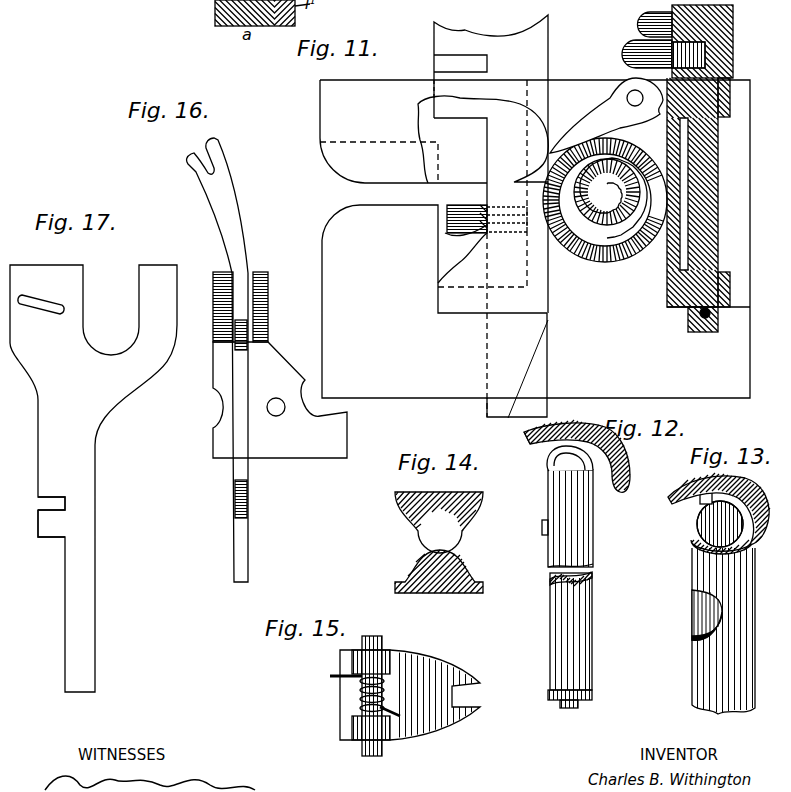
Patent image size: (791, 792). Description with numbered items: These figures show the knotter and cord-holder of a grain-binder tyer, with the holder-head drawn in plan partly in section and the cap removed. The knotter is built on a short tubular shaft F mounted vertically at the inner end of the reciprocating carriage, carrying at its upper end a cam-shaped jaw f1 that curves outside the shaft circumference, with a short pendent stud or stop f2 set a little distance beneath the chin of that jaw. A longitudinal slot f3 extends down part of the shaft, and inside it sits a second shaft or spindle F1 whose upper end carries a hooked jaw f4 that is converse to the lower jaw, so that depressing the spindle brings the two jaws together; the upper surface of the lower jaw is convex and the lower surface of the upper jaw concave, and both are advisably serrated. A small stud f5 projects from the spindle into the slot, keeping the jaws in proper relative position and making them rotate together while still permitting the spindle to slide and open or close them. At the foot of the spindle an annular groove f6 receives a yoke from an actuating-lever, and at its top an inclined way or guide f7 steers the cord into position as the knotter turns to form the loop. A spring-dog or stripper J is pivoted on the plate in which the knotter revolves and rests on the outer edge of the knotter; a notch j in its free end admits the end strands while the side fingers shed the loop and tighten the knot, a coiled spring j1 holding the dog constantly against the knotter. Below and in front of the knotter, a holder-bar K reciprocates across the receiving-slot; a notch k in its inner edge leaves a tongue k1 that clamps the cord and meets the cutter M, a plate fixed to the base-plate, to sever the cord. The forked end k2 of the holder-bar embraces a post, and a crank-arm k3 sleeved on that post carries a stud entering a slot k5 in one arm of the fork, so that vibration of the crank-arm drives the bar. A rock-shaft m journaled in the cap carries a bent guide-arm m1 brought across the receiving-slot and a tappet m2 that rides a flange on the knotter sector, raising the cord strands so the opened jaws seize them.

In FIG. 11, the cutter M is at (535, 249).
In FIG. 11, the holder-bar K is at (491, 164).
In FIG. 17, the holder-bar K is at (93, 478).
In FIG. 11, the notch k is at (458, 63).
In FIG. 17, the notch k is at (40, 506).
In FIG. 17, the tongue k1 is at (58, 527).
In FIG. 11, the fork k2 is at (483, 139).
In FIG. 17, the fork k2 is at (111, 319).
In FIG. 11, the crank-arm k3 is at (455, 222).
In FIG. 17, the slot k5 is at (48, 299).
In FIG. 11, the spring-dog or stripper J is at (606, 115).
In FIG. 15, the spring-dog or stripper J is at (410, 695).
In FIG. 11, the rock-shaft m is at (708, 168).
In FIG. 11, the guide-arm m1 is at (622, 48).
In FIG. 11, the tappet m2 is at (640, 14).
In FIG. 16, the lever arm I is at (240, 242).
In FIG. 13, the tubular shaft F is at (732, 631).
In FIG. 12, the inner shaft or spindle F1 is at (580, 580).
In FIG. 14, the cam-shaped projection or jaw f1 is at (439, 581).
In FIG. 13, the cam-shaped projection or jaw f1 is at (742, 481).
In FIG. 13, the pendent stud or stop f2 is at (700, 498).
In FIG. 13, the longitudinal slot f3 is at (700, 520).
In FIG. 14, the hooked jaw f4 is at (439, 513).
In FIG. 12, the hooked jaw f4 is at (541, 441).
In FIG. 12, the stud f5 is at (542, 530).
In FIG. 12, the annular groove f6 is at (594, 698).
In FIG. 12, the inclined way or guide f7 is at (633, 486).
In FIG. 15, the notch j is at (468, 696).
In FIG. 15, the coiled spring j1 is at (362, 694).